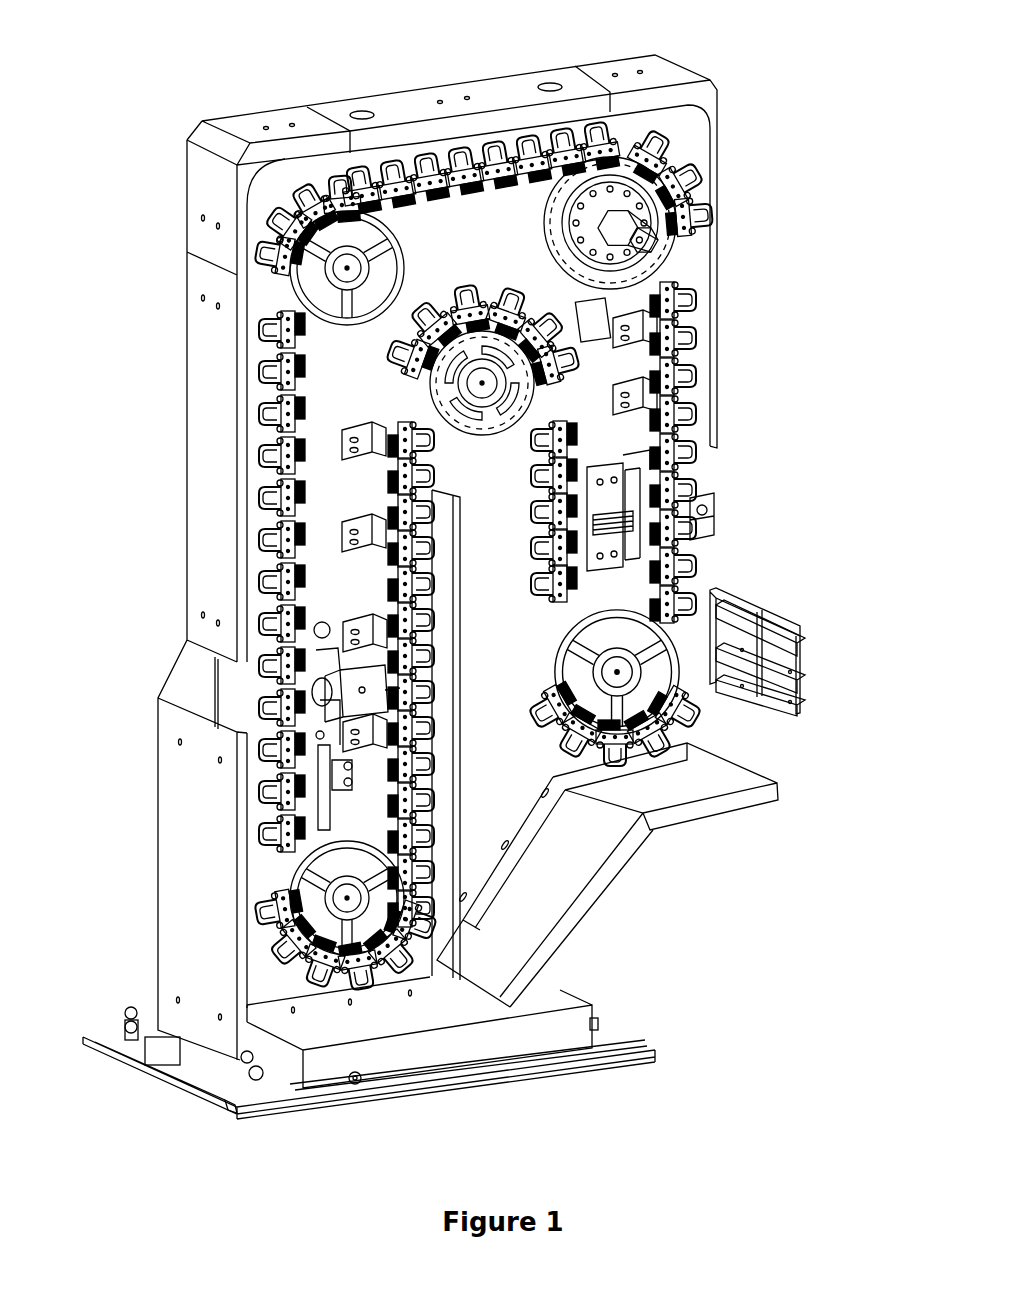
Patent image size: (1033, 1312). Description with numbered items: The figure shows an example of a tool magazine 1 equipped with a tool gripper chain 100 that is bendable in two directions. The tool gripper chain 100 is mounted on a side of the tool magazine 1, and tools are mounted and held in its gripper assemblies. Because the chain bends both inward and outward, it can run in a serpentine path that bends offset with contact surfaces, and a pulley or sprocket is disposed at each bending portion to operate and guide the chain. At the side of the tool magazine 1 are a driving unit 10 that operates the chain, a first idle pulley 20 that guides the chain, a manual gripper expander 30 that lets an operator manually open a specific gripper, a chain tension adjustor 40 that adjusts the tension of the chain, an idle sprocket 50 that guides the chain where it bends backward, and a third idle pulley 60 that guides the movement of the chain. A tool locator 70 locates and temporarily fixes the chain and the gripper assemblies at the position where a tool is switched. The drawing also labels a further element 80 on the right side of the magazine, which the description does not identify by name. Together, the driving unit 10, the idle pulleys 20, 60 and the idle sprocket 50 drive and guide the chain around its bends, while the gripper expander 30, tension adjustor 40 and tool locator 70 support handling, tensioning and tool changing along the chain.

The tool magazine 1 is at (137, 88).
The tool gripper chain 100 is at (455, 148).
The driving unit 10 is at (687, 187).
The first idle pulley 20 is at (400, 240).
The manual gripper expander 30 is at (335, 657).
The chain tension adjustor 40 is at (305, 825).
The idle sprocket 50 is at (520, 386).
The third idle pulley 60 is at (640, 608).
The tool locator 70 is at (627, 448).
The release mechanism 80 is at (722, 508).